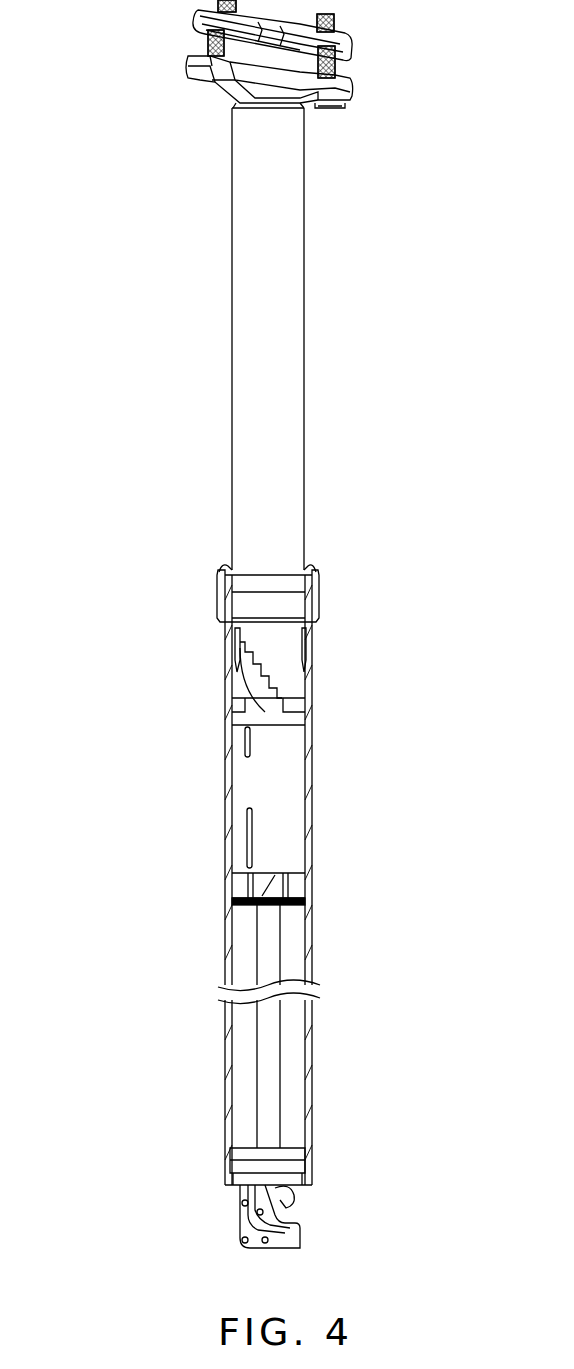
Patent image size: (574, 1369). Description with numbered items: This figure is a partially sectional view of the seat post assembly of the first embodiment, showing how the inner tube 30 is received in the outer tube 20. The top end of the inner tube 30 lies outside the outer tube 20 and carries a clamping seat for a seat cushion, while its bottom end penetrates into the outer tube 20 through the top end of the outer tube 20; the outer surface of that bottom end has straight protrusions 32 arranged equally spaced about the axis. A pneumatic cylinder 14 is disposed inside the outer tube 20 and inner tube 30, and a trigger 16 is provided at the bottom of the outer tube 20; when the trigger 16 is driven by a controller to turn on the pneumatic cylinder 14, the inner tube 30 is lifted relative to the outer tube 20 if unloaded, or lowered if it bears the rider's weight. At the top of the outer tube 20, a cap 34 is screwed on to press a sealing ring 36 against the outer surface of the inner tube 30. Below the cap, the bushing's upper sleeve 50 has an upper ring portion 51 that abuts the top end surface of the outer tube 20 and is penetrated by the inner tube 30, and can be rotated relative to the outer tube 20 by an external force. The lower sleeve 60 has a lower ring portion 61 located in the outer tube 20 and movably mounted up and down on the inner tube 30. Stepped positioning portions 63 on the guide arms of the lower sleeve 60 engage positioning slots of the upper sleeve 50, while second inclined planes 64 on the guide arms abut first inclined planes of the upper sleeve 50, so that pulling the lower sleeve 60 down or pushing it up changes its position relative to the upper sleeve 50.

The pneumatic cylinder 14 is at (246, 914).
The trigger 16 is at (302, 1206).
The outer tube 20 is at (312, 935).
The inner tube 30 is at (290, 347).
The protrusion 32 is at (243, 745).
The cap 34 is at (318, 593).
The sealing ring 36 is at (306, 572).
The upper sleeve 50 is at (233, 654).
The upper ring portion 51 is at (230, 600).
The lower sleeve 60 is at (284, 732).
The lower ring portion 61 is at (232, 720).
The positioning portion 63 is at (238, 646).
The second inclined plane 64 is at (240, 685).